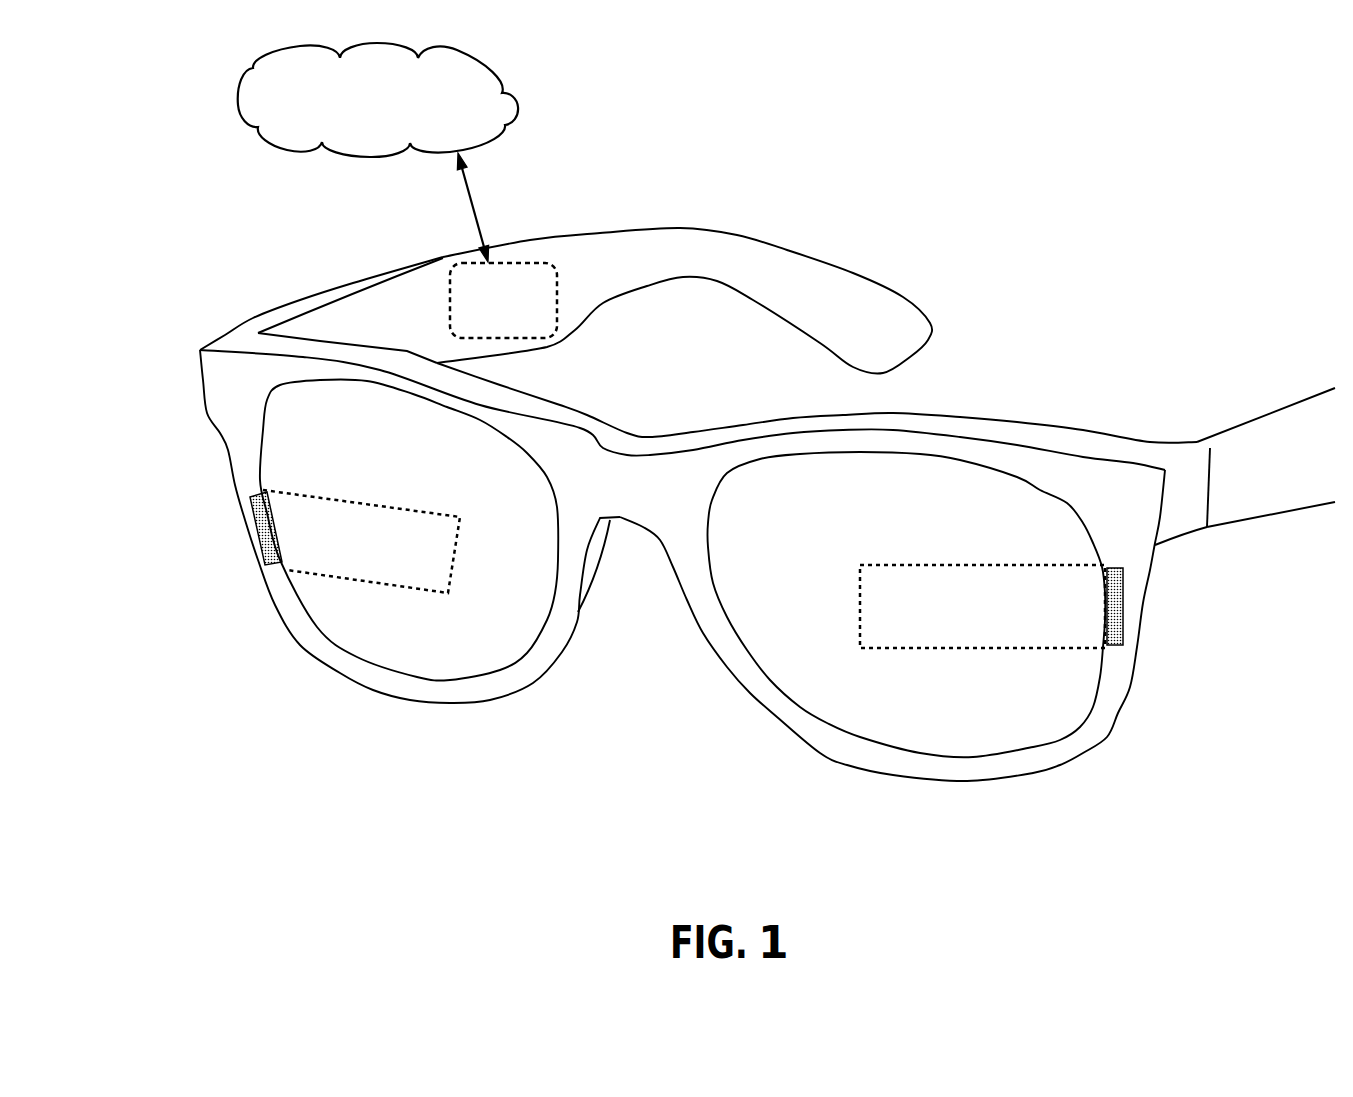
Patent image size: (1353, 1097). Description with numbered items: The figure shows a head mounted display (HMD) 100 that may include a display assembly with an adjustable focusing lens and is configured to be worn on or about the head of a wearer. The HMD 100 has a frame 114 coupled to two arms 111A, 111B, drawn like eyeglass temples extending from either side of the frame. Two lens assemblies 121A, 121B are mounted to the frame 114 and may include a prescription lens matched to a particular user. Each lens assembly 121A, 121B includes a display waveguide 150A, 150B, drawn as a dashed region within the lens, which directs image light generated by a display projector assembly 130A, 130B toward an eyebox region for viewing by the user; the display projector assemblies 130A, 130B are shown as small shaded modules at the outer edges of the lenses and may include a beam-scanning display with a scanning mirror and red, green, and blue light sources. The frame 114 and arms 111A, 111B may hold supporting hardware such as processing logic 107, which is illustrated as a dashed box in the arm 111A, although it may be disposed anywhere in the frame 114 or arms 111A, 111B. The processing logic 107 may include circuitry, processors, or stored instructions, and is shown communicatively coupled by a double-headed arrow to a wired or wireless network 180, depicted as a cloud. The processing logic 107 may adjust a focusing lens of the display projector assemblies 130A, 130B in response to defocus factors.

The head mounted display 100 is at (1257, 96).
The network 180 is at (435, 113).
The processing logic 107 is at (517, 326).
The arm 111A is at (613, 281).
The arm 111B is at (1280, 483).
The frame 114 is at (252, 395).
The lens assembly 121A is at (525, 573).
The lens assembly 121B is at (933, 491).
The display projector assembly 130A is at (214, 528).
The display projector assembly 130B is at (1167, 605).
The display waveguide 150A is at (288, 501).
The display waveguide 150B is at (982, 624).